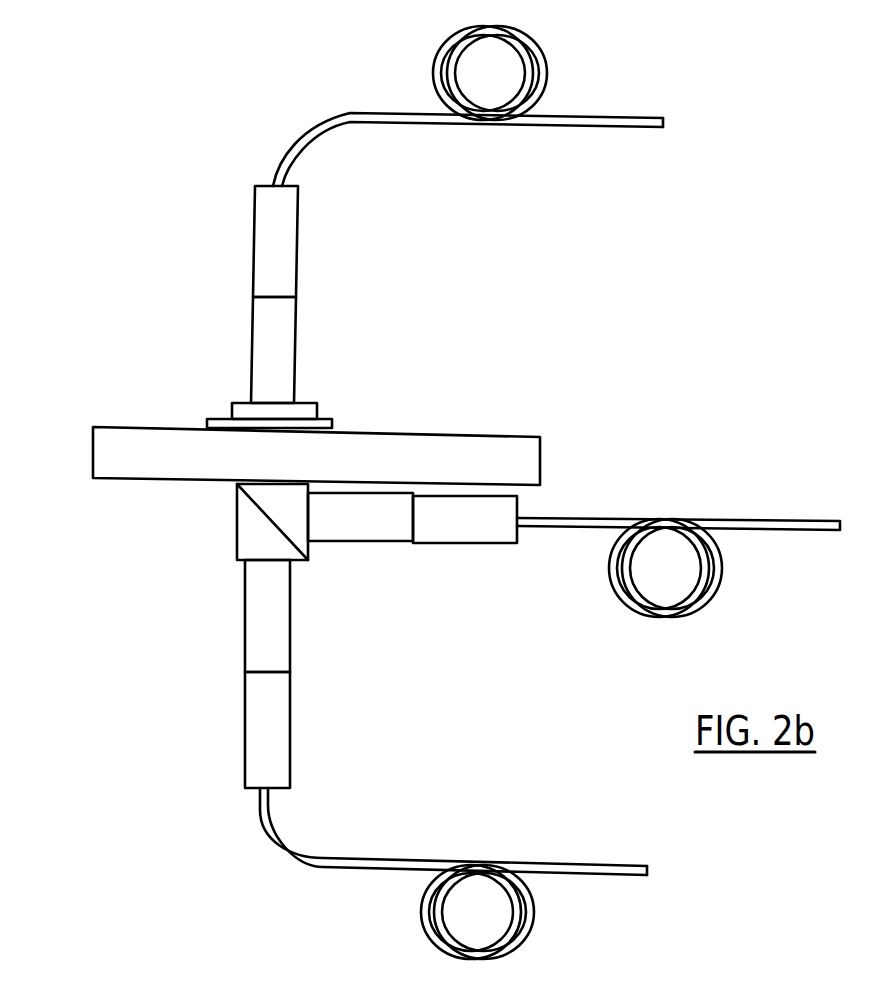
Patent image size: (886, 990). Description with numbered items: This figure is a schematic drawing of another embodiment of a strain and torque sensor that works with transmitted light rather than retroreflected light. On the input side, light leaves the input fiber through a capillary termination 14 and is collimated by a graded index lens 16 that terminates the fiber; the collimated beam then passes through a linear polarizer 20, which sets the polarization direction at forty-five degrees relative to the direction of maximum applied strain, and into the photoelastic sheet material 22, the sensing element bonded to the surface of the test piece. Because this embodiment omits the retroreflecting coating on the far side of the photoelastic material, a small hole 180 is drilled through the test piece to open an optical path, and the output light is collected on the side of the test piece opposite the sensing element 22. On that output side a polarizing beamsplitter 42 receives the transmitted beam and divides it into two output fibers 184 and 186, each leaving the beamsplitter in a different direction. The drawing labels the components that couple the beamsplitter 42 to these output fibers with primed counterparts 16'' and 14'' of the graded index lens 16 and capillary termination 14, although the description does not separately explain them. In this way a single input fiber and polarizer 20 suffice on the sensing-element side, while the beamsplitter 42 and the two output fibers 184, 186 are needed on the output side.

The capillary termination 14 is at (249, 241).
The graded index (GRIN) lens 16 is at (248, 350).
The linear polarizer 20 is at (317, 411).
The photoelastic sheet material 22 is at (207, 422).
The polarizing beamsplitter 42 is at (237, 520).
The small hole 180 is at (93, 450).
The output fiber 184 is at (283, 853).
The output fiber 186 is at (758, 518).
The second fiber section (double prime) 16'' is at (300, 583).
The first fiber section (double prime) 14'' is at (350, 642).